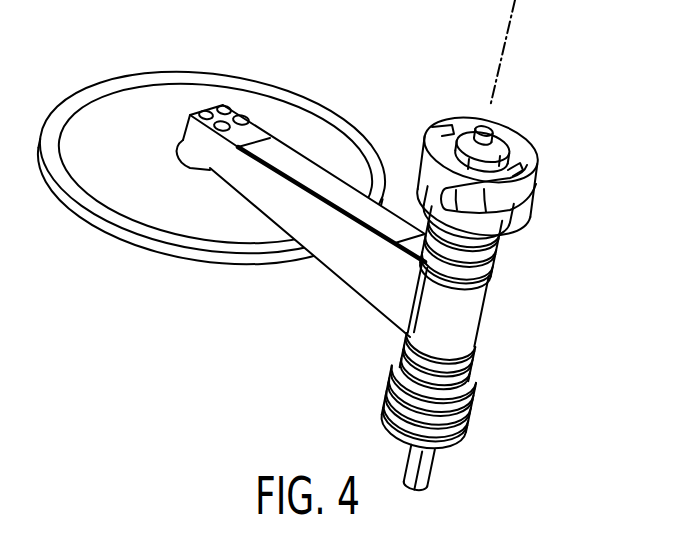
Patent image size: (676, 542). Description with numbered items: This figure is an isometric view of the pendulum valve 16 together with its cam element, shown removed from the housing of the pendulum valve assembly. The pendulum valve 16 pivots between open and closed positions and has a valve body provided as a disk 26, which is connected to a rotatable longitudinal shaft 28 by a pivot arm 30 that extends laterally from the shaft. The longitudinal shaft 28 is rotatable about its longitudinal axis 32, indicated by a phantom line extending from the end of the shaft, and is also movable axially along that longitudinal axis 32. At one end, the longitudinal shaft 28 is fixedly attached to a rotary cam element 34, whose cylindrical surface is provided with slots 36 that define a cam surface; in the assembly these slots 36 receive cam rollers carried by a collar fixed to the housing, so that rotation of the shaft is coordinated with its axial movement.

The pendulum valve 16 is at (303, 249).
The disk 26 is at (165, 213).
The longitudinal shaft 28 is at (467, 330).
The pivot arm 30 is at (350, 268).
The longitudinal axis 32 is at (512, 18).
The rotary cam element 34 is at (520, 147).
The slots 36 is at (447, 126).